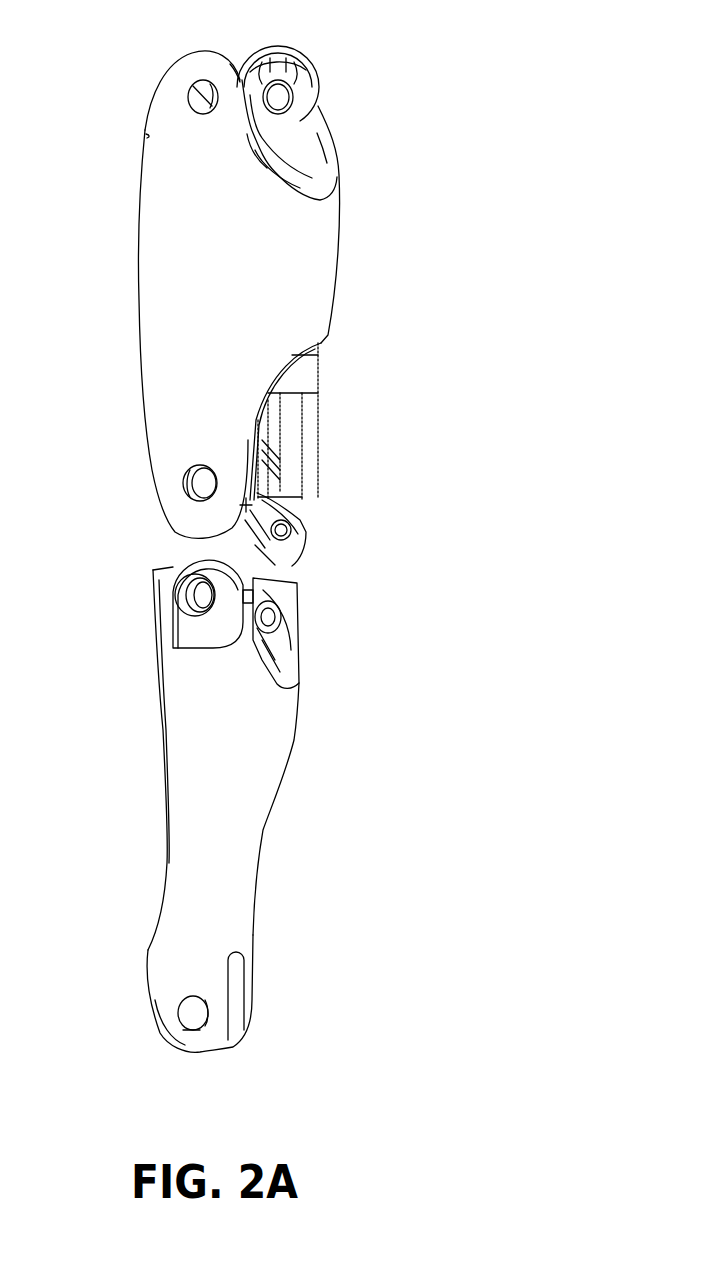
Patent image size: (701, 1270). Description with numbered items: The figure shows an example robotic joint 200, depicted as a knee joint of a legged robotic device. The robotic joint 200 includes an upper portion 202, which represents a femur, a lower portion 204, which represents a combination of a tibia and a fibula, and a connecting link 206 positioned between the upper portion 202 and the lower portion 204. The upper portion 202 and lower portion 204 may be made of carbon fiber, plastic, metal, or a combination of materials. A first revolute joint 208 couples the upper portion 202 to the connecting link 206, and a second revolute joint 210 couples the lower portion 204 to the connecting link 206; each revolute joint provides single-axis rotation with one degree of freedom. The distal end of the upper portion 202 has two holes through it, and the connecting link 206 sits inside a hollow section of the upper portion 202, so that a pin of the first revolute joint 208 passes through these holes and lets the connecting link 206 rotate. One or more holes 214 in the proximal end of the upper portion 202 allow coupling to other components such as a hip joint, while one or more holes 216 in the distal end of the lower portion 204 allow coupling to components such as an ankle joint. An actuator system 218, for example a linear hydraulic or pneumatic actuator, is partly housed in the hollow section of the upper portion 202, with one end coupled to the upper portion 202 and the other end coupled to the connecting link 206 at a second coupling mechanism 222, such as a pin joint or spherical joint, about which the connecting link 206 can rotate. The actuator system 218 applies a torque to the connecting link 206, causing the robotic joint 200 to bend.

The robotic joint 200 is at (480, 108).
The upper portion 202 is at (238, 292).
The lower portion 204 is at (150, 934).
The connecting link 206 is at (283, 560).
The first revolute joint 208 is at (184, 490).
The second revolute joint 210 is at (183, 583).
The holes 214 is at (191, 92).
The holes 216 is at (177, 1017).
The actuator system 218 is at (292, 458).
The second coupling mechanism 222 is at (307, 522).